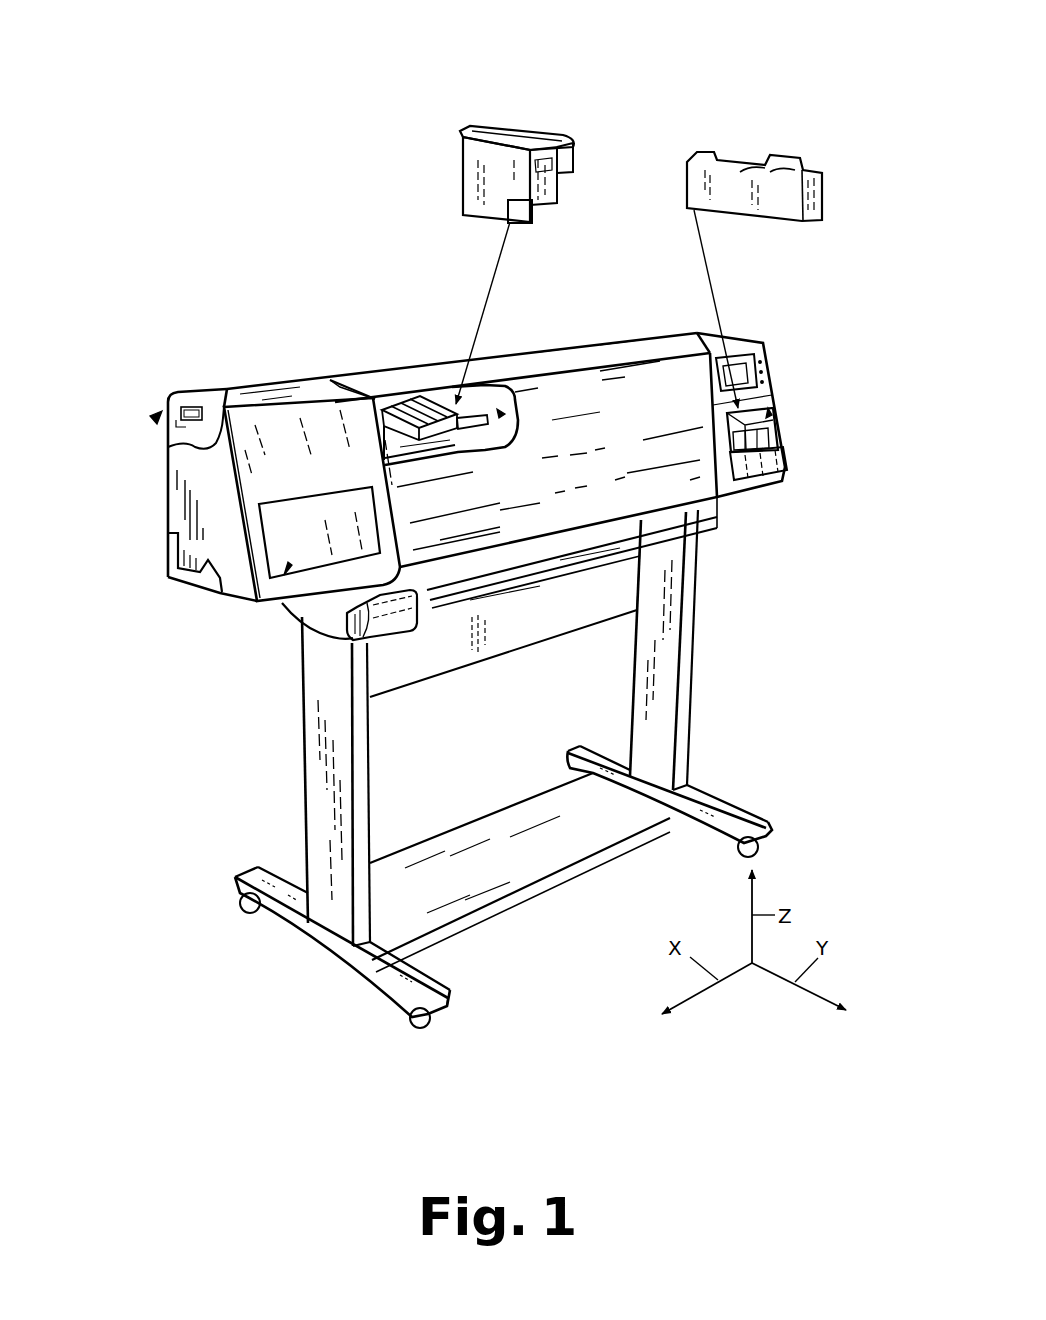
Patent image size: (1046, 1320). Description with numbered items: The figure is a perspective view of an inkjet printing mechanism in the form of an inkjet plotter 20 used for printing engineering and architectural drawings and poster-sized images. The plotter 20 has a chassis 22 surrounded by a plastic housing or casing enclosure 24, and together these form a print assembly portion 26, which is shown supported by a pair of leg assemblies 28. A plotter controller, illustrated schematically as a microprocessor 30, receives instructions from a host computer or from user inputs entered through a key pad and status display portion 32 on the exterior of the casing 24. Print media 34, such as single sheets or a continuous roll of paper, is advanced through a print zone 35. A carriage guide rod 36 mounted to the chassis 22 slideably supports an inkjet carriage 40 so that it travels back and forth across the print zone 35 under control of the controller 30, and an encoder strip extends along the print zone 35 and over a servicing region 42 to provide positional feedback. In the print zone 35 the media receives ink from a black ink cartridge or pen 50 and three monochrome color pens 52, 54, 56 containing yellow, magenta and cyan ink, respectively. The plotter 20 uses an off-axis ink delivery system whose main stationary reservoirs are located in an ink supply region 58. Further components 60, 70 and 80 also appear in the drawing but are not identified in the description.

The inkjet plotter 20 is at (243, 88).
The chassis 22 is at (180, 585).
The housing or casing enclosure 24 is at (168, 508).
The print assembly portion 26 is at (155, 418).
The leg assemblies 28 is at (657, 670).
The plotter controller (microprocessor) 30 is at (193, 400).
The key pad and status display portion 32 is at (768, 357).
The print media 34 is at (350, 647).
The print zone 35 is at (516, 410).
The carriage guide rod 36 is at (516, 383).
The inkjet carriage 40 is at (440, 458).
The servicing region 42 is at (775, 412).
The black ink cartridge or pen 50 is at (466, 158).
The color ink cartridge or pen 52 is at (400, 394).
The color ink cartridge or pen 54 is at (357, 390).
The color ink cartridge or pen 56 is at (400, 466).
The ink supply region 58 is at (225, 598).
The printhead nozzle portion 60 is at (478, 222).
The access door 70 is at (790, 455).
The ink cartridge 80 is at (818, 180).